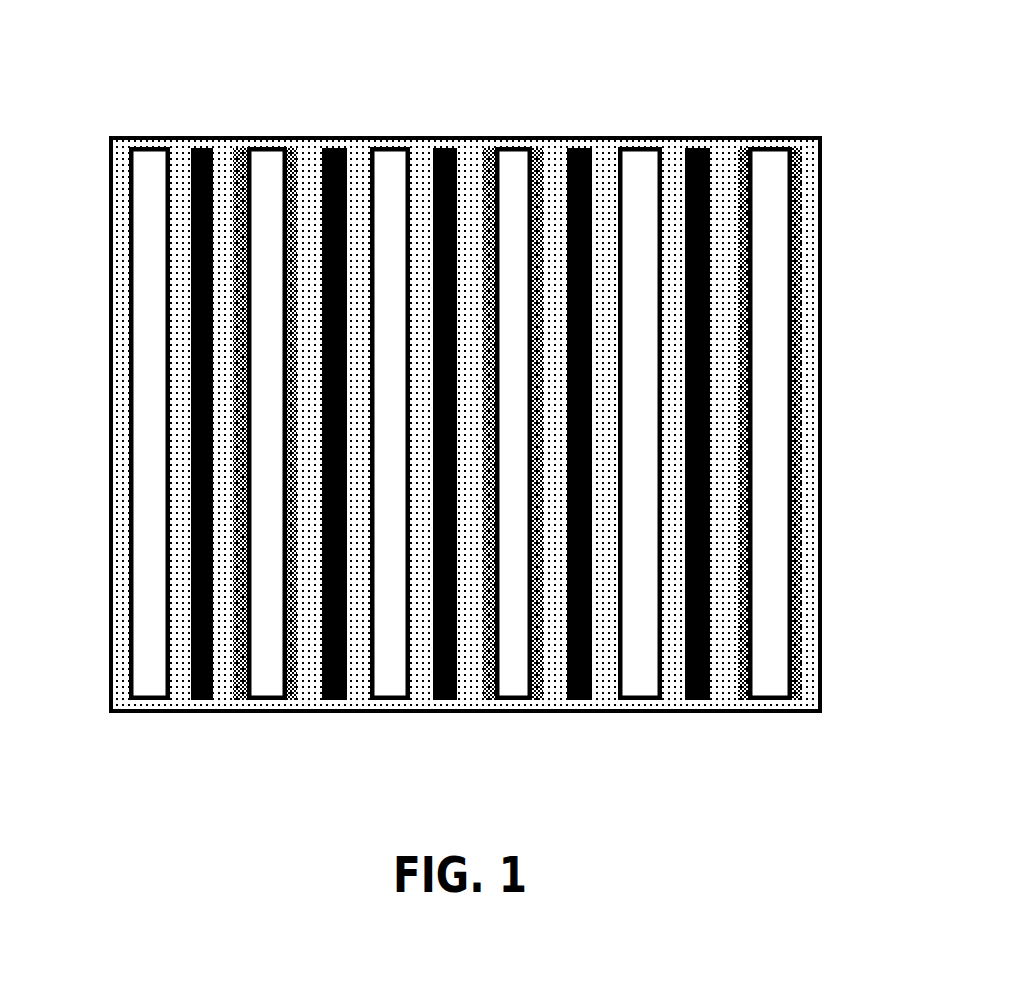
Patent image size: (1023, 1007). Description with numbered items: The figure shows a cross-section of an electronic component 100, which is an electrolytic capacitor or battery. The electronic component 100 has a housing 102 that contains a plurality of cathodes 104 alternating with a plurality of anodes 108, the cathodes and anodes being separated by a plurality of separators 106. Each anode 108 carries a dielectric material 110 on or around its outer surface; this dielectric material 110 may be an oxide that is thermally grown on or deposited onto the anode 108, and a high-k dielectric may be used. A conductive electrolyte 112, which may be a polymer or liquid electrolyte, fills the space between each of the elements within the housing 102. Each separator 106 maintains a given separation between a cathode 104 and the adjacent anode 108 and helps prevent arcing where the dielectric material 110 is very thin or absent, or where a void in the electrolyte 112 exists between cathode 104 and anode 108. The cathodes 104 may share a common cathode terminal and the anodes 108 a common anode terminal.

The electronic component 100 is at (508, 33).
The housing 102 is at (823, 177).
The cathode 104 is at (150, 712).
The separator 106 is at (210, 700).
The anode 108 is at (270, 700).
The dielectric material 110 is at (238, 153).
The conductive electrolyte 112 is at (675, 168).